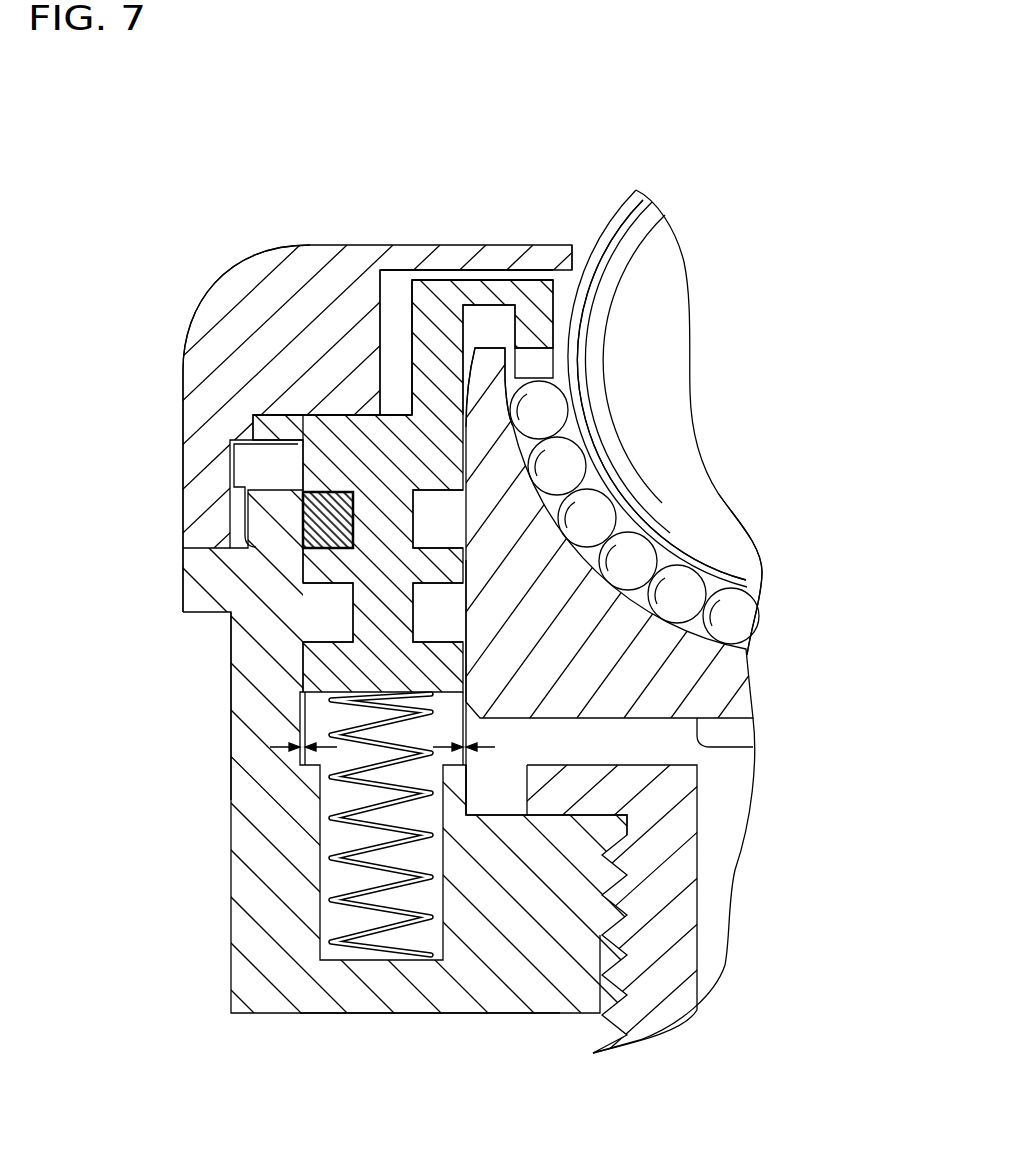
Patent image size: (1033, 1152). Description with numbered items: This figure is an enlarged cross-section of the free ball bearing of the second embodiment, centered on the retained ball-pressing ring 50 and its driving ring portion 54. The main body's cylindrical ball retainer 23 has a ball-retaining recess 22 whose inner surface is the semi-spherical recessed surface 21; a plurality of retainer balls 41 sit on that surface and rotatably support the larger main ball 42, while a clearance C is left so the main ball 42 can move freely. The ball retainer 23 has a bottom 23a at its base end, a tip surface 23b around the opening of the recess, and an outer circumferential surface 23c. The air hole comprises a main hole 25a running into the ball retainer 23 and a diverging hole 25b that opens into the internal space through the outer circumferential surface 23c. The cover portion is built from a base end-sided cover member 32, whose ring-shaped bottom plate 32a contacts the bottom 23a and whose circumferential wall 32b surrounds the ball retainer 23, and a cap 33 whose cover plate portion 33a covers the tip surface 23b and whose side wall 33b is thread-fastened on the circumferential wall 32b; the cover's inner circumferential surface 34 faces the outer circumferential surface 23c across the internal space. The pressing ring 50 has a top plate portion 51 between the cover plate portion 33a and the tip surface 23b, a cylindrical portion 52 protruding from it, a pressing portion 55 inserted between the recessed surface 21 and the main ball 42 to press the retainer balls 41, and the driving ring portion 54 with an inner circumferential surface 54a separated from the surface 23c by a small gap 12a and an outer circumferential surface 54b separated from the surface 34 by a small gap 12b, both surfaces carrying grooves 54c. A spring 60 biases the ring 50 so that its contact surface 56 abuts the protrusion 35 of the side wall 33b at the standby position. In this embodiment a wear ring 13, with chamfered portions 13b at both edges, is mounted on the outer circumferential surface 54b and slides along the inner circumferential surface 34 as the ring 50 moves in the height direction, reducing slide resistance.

The inner circumferential small clearance 12a is at (477, 735).
The outer circumferential small clearance 12b is at (337, 748).
The wear ring 13 is at (250, 437).
The chamfered portions 13b is at (250, 445).
The semi-spherical recessed surface 21 is at (705, 622).
The ball-retaining recess 22 is at (663, 560).
The ball retainer 23 is at (728, 682).
The bottom 23a is at (753, 747).
The tip surface 23b is at (488, 348).
The outer circumferential surface 23c is at (470, 605).
The main hole 25a is at (720, 863).
The diverging hole 25b is at (543, 752).
The base end-sided cover member 32 is at (230, 945).
The bottom plate 32a is at (520, 1015).
The circumferential wall 32b is at (233, 730).
The cap 33 is at (270, 250).
The cover plate portion 33a is at (435, 270).
The side wall 33b is at (183, 427).
The inner circumferential surface 34 is at (317, 500).
The protrusion 35 is at (280, 330).
The retainer balls 41 is at (567, 455).
The main ball 42 is at (617, 220).
The retained ball-pressing ring 50 is at (398, 312).
The top plate portion 51 is at (470, 278).
The cylindrical portion 52 is at (345, 428).
The driving ring portion 54 is at (302, 680).
The inner circumferential surface 54a is at (437, 528).
The outer circumferential surface 54b is at (327, 615).
The groove 54c is at (300, 533).
The pressing portion 55 is at (552, 366).
The contact surface 56 is at (318, 430).
The spring 60 is at (325, 855).
The clearance C is at (585, 253).